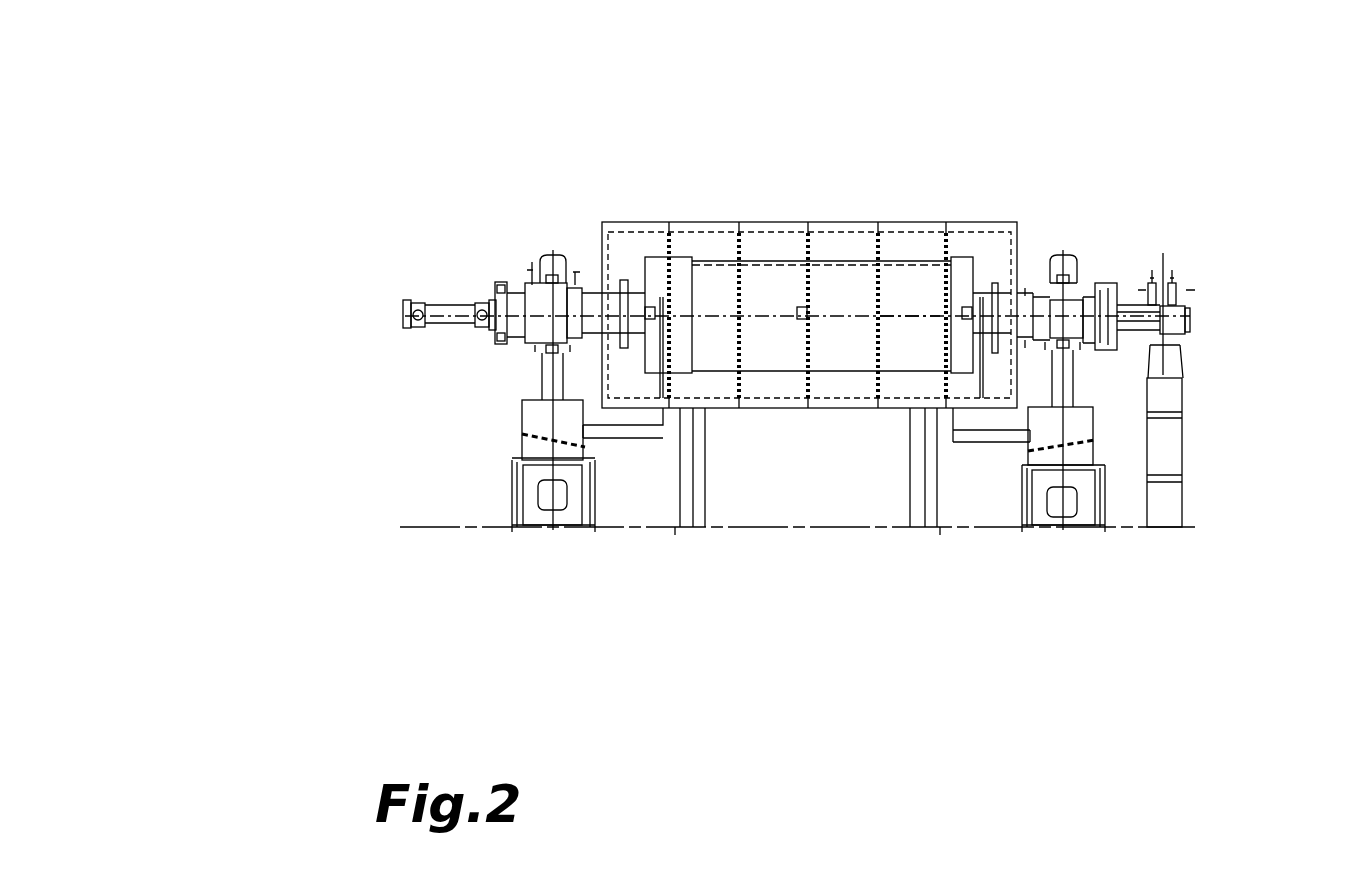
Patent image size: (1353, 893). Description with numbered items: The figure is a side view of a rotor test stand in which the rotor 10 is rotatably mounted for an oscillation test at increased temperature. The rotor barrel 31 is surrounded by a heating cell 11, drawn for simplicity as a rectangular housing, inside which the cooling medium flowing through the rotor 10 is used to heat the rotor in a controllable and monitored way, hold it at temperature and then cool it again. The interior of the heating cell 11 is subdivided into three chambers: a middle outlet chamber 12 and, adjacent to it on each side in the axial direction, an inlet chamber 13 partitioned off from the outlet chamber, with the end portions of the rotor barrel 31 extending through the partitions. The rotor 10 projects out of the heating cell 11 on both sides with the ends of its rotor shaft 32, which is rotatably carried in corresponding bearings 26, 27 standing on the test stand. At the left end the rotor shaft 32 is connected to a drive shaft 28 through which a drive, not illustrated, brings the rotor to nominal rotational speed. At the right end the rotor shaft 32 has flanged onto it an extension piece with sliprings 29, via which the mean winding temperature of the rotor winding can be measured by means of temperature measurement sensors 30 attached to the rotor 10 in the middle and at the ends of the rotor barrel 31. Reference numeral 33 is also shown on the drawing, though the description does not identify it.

The rotor 10 is at (842, 380).
The heating cell 11 is at (622, 222).
The middle outlet chamber 12 is at (786, 387).
The inlet chamber 13 is at (985, 248).
The bearing 26 is at (547, 255).
The bearing 27 is at (1065, 282).
The drive shaft 28 is at (446, 310).
The extension piece with sliprings 29 is at (1180, 293).
The temperature measurement sensors 30 is at (966, 307).
The rotor barrel 31 is at (768, 357).
The rotor shaft 32 is at (547, 322).
The shaft 33 is at (907, 317).